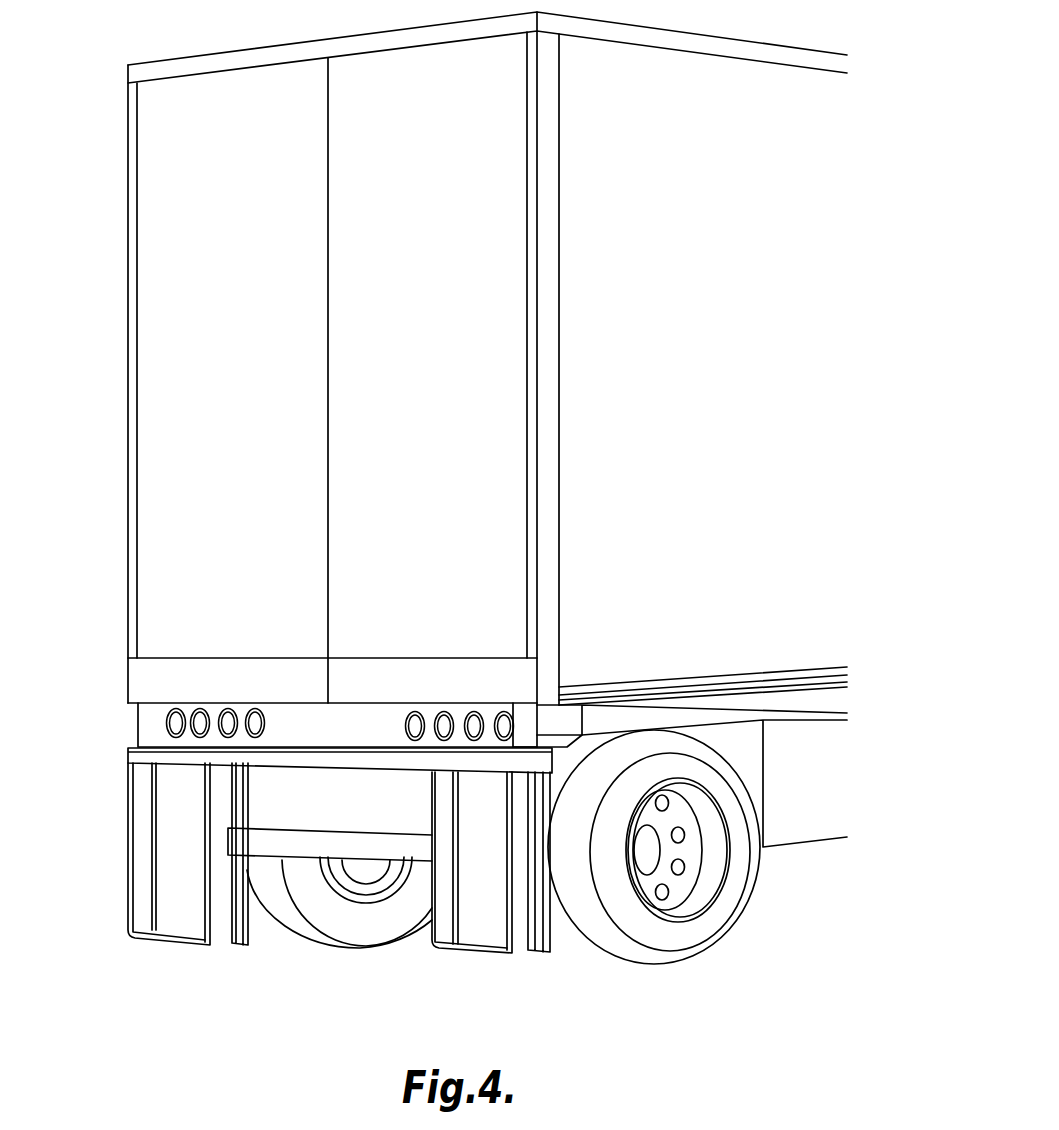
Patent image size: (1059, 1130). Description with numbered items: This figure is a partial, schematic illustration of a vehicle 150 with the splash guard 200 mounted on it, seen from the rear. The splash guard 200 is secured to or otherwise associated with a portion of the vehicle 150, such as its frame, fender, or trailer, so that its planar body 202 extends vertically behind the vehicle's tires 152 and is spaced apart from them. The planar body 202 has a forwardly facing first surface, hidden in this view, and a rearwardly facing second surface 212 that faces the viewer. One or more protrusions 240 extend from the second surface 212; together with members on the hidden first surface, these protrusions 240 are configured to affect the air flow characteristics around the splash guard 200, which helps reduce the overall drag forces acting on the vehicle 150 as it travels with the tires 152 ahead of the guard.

The vehicle 150 is at (122, 236).
The tires 152 is at (302, 927).
The splash guard 200 is at (307, 879).
The planar body 202 is at (311, 883).
The second surface 212 is at (197, 846).
The protrusions 240 is at (143, 852).